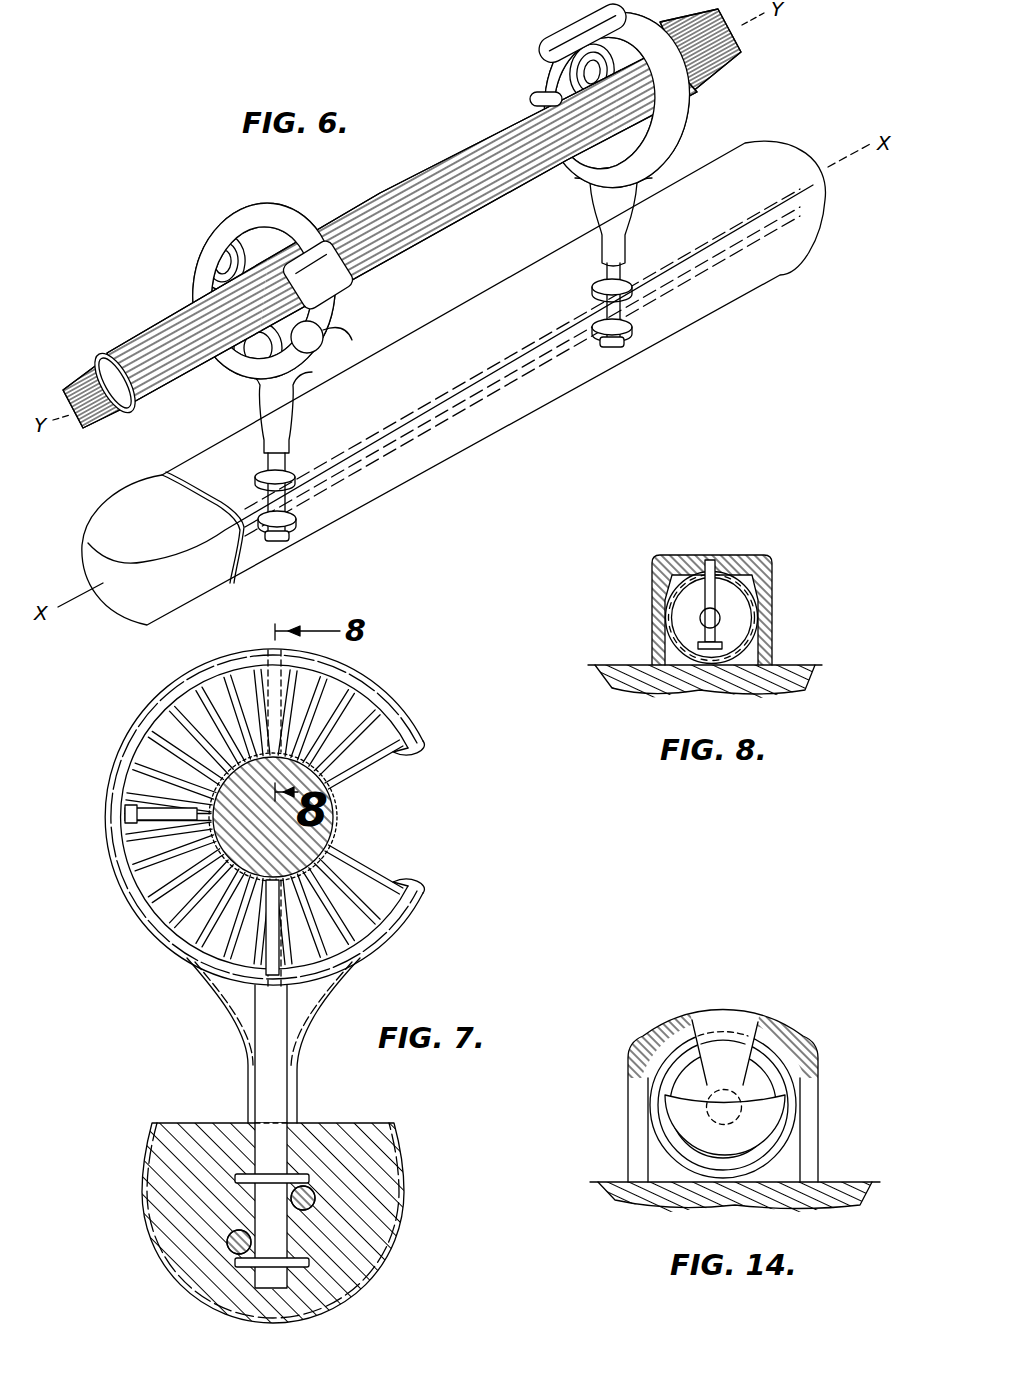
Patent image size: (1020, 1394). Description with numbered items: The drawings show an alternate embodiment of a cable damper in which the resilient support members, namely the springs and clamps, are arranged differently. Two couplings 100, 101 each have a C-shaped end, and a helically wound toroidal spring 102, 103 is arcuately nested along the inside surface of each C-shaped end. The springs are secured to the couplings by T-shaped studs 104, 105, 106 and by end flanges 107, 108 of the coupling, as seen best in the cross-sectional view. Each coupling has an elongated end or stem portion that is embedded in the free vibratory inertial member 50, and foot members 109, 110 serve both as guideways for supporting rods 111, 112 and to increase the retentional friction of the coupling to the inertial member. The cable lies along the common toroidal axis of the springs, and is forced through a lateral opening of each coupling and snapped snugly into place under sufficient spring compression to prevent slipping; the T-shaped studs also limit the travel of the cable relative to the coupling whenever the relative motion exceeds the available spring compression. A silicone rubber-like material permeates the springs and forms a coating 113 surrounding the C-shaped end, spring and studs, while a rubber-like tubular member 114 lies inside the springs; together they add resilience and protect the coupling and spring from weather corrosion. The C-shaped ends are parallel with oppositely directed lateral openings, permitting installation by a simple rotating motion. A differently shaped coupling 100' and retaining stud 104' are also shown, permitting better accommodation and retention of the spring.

In FIG. 7, the free vibratory inertial member 50 is at (395, 1208).
In FIG. 6, the coupling 100 is at (264, 275).
In FIG. 7, the coupling 100 is at (249, 817).
In FIG. 8, the coupling 100 is at (740, 598).
In FIG. 14, the differently shaped coupling 100' is at (747, 1094).
In FIG. 6, the coupling 101 is at (640, 37).
In FIG. 6, the helically wound toroidal spring 102 is at (237, 245).
In FIG. 7, the helically wound toroidal spring 102 is at (357, 777).
In FIG. 8, the helically wound toroidal spring 102 is at (672, 592).
In FIG. 14, the helically wound toroidal spring 102 is at (788, 1083).
In FIG. 6, the helically wound toroidal spring 103 is at (553, 75).
In FIG. 7, the T-shaped stud 104 is at (265, 801).
In FIG. 8, the T-shaped stud 104 is at (765, 604).
In FIG. 14, the retaining stud 104' is at (756, 1028).
In FIG. 7, the T-shaped stud 105 is at (135, 810).
In FIG. 7, the T-shaped stud 106 is at (273, 940).
In FIG. 6, the end flange 107 is at (322, 268).
In FIG. 7, the end flange 107 is at (392, 748).
In FIG. 6, the end flange 108 is at (347, 323).
In FIG. 7, the end flange 108 is at (393, 890).
In FIG. 6, the foot member 109 is at (296, 470).
In FIG. 7, the foot member 109 is at (237, 1180).
In FIG. 6, the foot member 110 is at (298, 523).
In FIG. 7, the foot member 110 is at (303, 1262).
In FIG. 6, the supporting rod 111 is at (706, 240).
In FIG. 7, the supporting rod 111 is at (312, 1194).
In FIG. 6, the supporting rod 112 is at (217, 540).
In FIG. 7, the supporting rod 112 is at (240, 1243).
In FIG. 7, the coating 113 is at (252, 1098).
In FIG. 8, the coating 113 is at (655, 559).
In FIG. 14, the coating 113 is at (708, 1015).
In FIG. 6, the tubular member 114 is at (267, 263).
In FIG. 8, the tubular member 114 is at (690, 625).
In FIG. 14, the tubular member 114 is at (778, 1130).